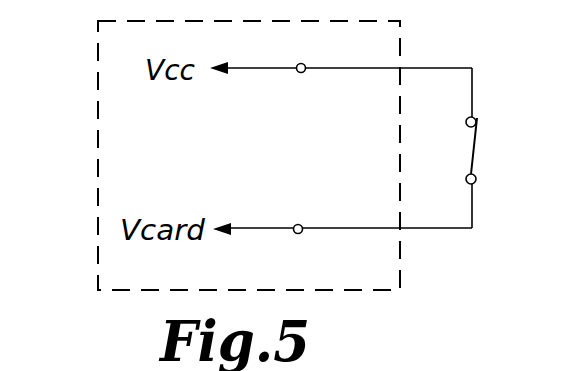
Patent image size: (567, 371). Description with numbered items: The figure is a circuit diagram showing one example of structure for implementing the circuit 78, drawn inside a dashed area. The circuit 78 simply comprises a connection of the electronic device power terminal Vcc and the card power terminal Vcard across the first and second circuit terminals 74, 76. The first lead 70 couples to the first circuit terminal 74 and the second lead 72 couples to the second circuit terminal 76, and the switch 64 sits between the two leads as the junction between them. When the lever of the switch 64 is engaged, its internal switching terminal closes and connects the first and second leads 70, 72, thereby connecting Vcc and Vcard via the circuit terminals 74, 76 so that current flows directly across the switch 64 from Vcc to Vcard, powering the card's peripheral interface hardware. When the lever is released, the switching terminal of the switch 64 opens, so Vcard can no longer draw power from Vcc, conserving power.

The circuit 78 is at (88, 120).
The first lead 70 is at (437, 66).
The second lead 72 is at (443, 228).
The first circuit terminal 74 is at (301, 73).
The second circuit terminal 76 is at (298, 223).
The switch 64 is at (478, 144).